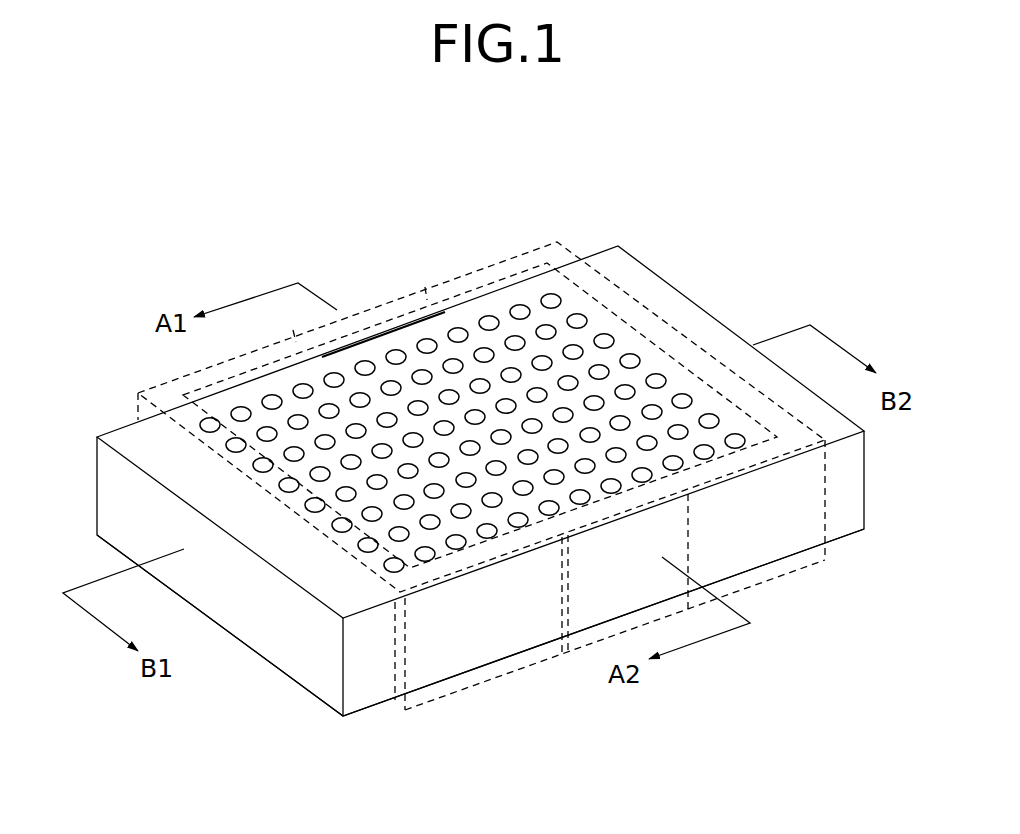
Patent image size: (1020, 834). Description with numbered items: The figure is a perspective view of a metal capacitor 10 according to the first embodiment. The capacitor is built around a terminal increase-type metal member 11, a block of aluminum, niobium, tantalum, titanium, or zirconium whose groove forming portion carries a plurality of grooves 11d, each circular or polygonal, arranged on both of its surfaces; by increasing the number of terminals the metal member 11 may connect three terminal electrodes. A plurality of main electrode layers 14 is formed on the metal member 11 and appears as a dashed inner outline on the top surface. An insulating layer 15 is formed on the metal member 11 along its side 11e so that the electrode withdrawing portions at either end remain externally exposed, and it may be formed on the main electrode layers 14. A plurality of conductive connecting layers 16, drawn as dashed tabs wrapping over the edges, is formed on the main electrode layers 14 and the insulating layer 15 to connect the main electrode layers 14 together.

The metal capacitor 10 is at (518, 224).
The terminal increase-type metal member 11 is at (102, 424).
The grooves 11d is at (426, 554).
The side 11e is at (797, 528).
The main electrode layers 14 is at (640, 347).
The insulating layer 15 is at (457, 283).
The conductive connecting layers 16 is at (377, 303).